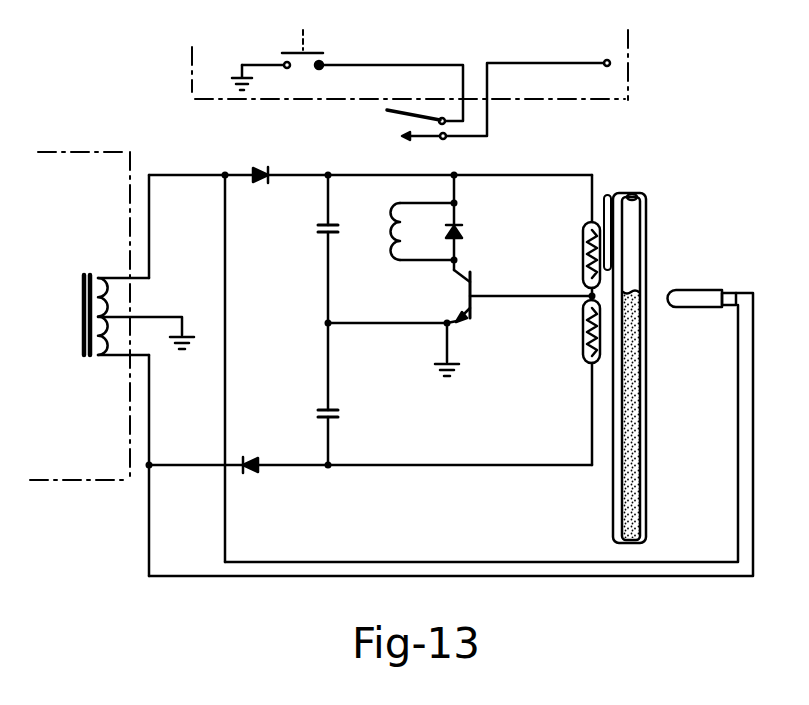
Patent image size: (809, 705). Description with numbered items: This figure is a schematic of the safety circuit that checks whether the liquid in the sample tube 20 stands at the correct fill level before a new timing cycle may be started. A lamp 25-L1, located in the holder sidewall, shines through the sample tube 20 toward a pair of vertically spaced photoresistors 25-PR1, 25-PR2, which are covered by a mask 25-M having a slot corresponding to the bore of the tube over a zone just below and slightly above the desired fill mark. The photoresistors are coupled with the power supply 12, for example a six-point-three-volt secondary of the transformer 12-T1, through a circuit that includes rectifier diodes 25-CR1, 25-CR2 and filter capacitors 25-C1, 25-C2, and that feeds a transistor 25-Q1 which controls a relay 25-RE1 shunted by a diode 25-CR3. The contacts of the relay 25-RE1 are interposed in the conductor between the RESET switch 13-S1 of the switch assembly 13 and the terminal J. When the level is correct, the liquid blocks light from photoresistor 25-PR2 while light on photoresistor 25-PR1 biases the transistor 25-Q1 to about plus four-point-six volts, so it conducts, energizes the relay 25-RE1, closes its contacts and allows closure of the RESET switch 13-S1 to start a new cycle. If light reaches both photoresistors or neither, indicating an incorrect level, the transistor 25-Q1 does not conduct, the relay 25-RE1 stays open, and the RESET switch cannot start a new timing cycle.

The switch assembly 13 is at (636, 66).
The RESET switch 13-S1 is at (418, 85).
The terminal J is at (605, 52).
The power supply 12 is at (105, 152).
The transformer 12-T1 is at (77, 288).
The diode 25-CR1 is at (253, 164).
The diode 25-CR2 is at (267, 480).
The diode 25-CR3 is at (458, 224).
The capacitor 25-C1 is at (322, 234).
The capacitor 25-C2 is at (328, 405).
The relay 25-RE1 is at (408, 224).
The transistor 25-Q1 is at (490, 319).
The photoresistor 25-PR1 is at (583, 262).
The photoresistor 25-PR2 is at (583, 332).
The mask 25-M is at (599, 201).
The sample tube 20 is at (648, 231).
The lamp 25-L1 is at (690, 291).